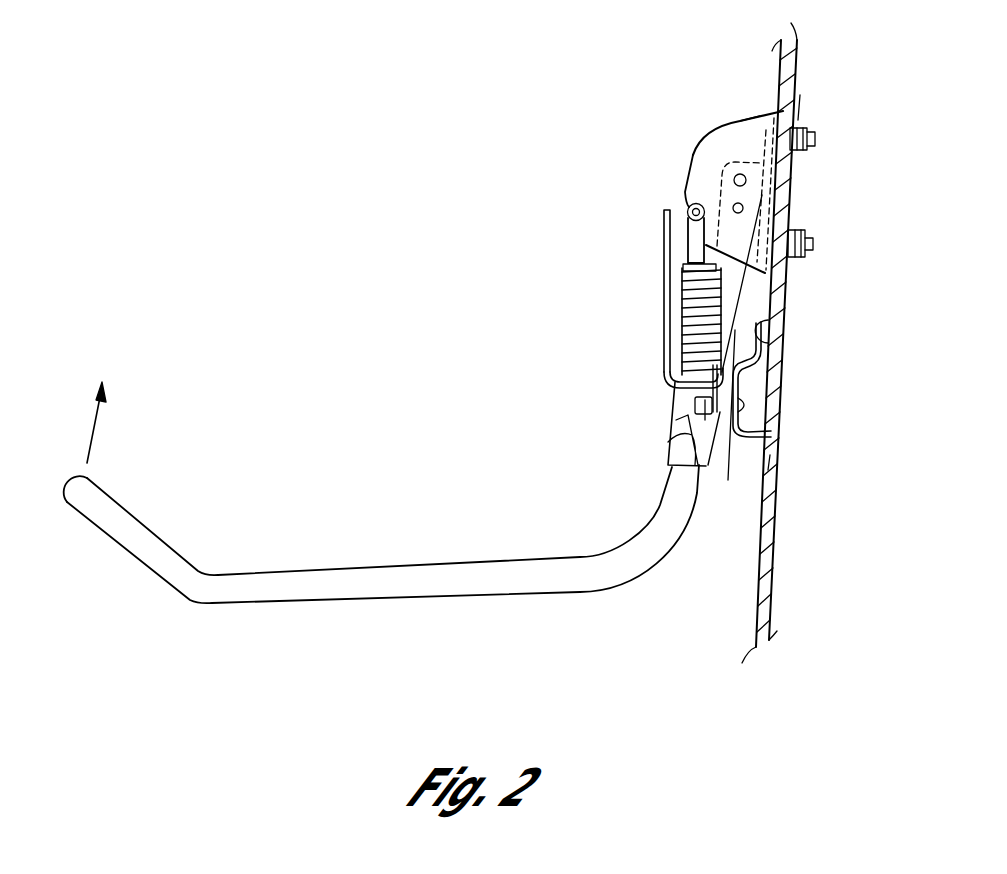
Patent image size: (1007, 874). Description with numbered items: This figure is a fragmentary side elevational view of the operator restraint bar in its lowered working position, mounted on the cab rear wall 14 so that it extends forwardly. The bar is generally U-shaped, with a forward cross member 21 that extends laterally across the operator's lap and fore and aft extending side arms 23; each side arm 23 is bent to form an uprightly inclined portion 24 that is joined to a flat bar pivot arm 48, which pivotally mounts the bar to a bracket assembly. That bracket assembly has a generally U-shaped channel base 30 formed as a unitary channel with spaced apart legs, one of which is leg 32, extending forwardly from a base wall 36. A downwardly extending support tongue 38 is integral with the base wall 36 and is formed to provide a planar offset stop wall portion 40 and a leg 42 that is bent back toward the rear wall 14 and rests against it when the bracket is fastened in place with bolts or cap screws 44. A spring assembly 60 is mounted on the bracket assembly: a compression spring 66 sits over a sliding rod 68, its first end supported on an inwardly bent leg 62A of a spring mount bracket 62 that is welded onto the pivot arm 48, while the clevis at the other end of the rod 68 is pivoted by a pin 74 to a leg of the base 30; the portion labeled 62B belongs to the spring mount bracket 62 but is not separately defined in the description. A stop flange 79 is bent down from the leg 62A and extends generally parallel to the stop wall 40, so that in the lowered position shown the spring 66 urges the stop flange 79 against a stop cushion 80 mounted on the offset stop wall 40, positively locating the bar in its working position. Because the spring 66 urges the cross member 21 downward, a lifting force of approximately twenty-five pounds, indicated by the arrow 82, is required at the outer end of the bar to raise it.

The rear wall 14 is at (772, 573).
The forward cross member 21 is at (70, 478).
The side arms 23 is at (332, 572).
The uprightly inclined portions 24 is at (658, 507).
The U-shaped channel base 30 is at (755, 102).
The leg 32 is at (717, 152).
The base wall 36 is at (815, 76).
The support tongue 38 is at (760, 329).
The offset stop wall portion 40 is at (745, 410).
The leg 42 is at (772, 462).
The bolts or cap screws 44 is at (815, 139).
The flat bar pivot arm 48 is at (747, 183).
The spring assembly 60 is at (684, 300).
The spring mount bracket 62 is at (686, 243).
The inwardly bent leg 62A is at (697, 381).
The upper portion of hanger link 62B is at (665, 262).
The compression spring 66 is at (722, 308).
The sliding rod 68 is at (675, 420).
The pin 74 is at (689, 204).
The stop flange 79 is at (694, 516).
The stop cushion 80 is at (731, 421).
The arrow 82 is at (92, 447).